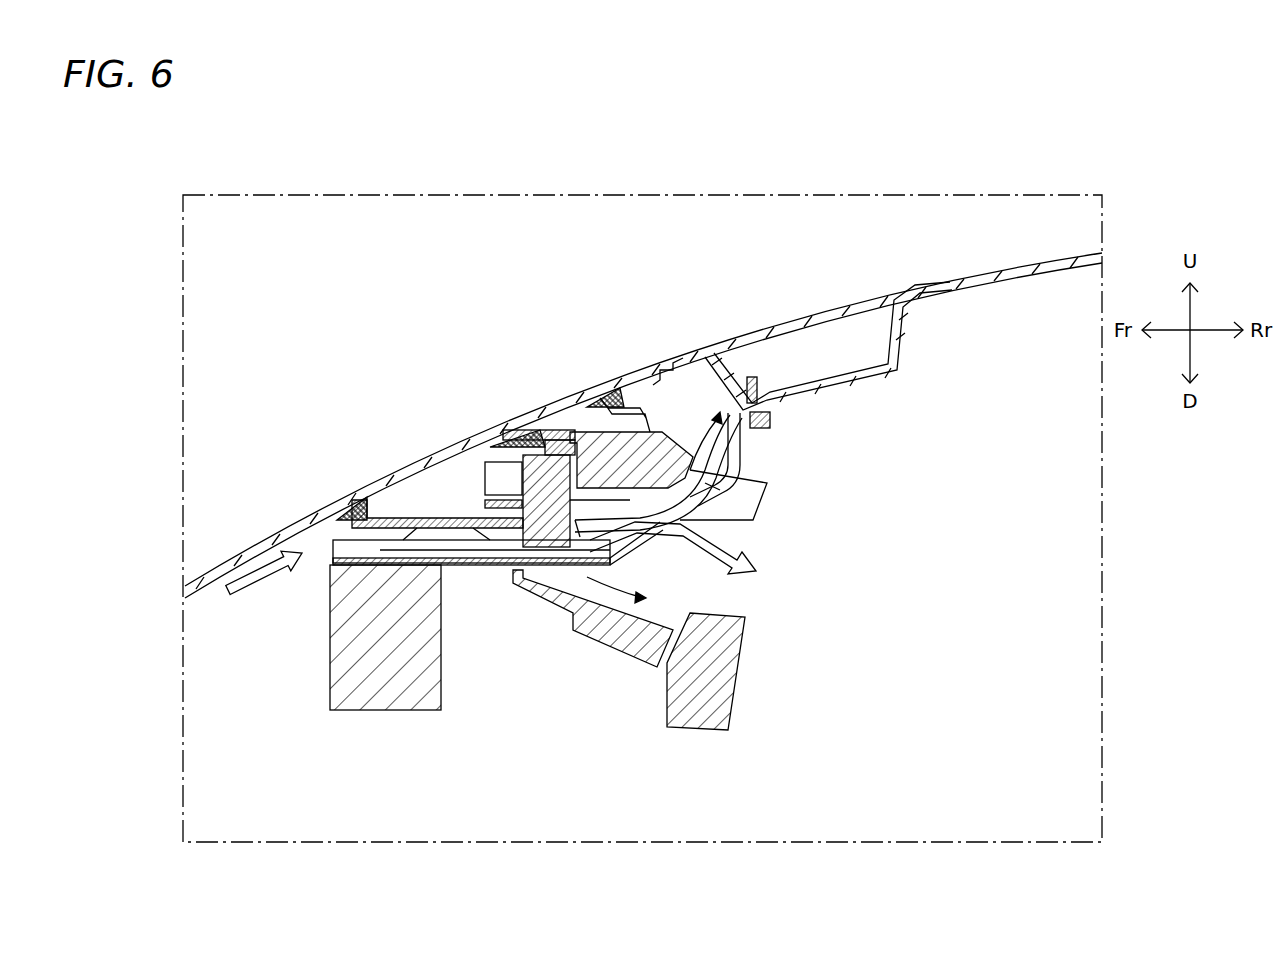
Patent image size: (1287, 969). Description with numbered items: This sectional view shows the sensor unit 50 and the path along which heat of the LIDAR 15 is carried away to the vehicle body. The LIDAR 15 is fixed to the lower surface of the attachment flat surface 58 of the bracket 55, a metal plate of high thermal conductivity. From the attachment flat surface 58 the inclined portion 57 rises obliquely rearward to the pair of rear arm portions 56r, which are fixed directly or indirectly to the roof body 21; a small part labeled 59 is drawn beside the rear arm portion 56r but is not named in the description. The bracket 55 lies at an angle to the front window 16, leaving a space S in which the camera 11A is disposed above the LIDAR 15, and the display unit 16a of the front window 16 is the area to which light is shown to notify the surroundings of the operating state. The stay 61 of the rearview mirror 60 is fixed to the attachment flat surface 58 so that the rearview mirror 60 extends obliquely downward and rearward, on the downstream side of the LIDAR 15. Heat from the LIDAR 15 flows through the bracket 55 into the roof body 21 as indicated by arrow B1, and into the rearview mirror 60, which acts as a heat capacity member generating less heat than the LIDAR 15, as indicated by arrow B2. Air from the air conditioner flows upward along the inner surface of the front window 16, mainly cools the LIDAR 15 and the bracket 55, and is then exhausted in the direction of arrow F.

The front window 16 is at (247, 543).
The display unit 16a is at (562, 405).
The roof body 21 is at (1025, 270).
The rear arm portions 56r is at (745, 440).
The mounting plate 59 is at (740, 490).
The camera 11A is at (494, 478).
The space S is at (460, 482).
The inclined portion 57 is at (650, 540).
The bracket 55 is at (450, 545).
The attachment flat surface 58 is at (478, 568).
The LIDAR 15 is at (372, 700).
The stay 61 is at (600, 643).
The rearview mirror 60 is at (740, 690).
The sensor unit 50 is at (552, 738).
The arrow F is at (682, 553).
The arrow B1 is at (706, 428).
The arrow B2 is at (633, 595).